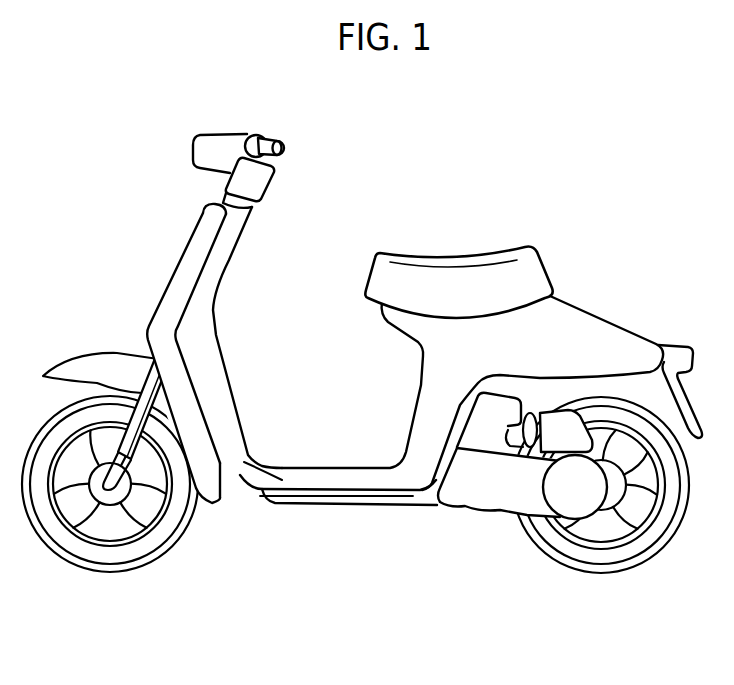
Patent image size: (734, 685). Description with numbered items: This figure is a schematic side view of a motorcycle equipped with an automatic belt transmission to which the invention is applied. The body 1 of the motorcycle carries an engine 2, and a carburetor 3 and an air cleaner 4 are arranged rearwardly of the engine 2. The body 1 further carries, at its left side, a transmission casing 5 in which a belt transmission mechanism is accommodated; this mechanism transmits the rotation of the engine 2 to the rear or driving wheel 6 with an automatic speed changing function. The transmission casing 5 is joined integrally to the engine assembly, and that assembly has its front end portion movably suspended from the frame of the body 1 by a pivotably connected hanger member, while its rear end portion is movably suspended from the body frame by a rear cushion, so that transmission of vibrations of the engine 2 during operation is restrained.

The body 1 is at (418, 387).
The engine 2 is at (466, 423).
The carburetor 3 is at (531, 412).
The air cleaner 4 is at (567, 423).
The transmission casing 5 is at (507, 493).
The rear or driving wheel 6 is at (670, 541).